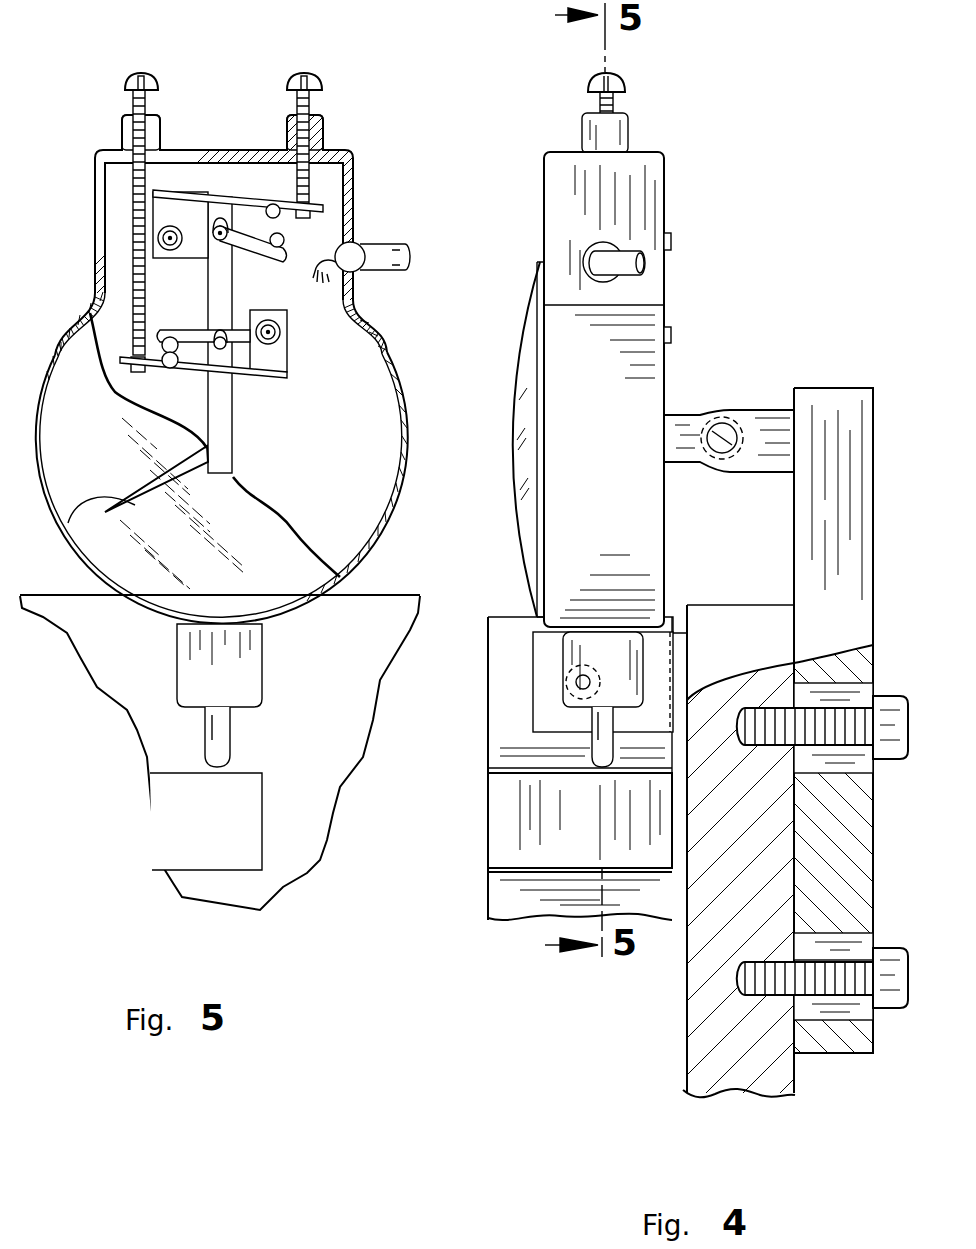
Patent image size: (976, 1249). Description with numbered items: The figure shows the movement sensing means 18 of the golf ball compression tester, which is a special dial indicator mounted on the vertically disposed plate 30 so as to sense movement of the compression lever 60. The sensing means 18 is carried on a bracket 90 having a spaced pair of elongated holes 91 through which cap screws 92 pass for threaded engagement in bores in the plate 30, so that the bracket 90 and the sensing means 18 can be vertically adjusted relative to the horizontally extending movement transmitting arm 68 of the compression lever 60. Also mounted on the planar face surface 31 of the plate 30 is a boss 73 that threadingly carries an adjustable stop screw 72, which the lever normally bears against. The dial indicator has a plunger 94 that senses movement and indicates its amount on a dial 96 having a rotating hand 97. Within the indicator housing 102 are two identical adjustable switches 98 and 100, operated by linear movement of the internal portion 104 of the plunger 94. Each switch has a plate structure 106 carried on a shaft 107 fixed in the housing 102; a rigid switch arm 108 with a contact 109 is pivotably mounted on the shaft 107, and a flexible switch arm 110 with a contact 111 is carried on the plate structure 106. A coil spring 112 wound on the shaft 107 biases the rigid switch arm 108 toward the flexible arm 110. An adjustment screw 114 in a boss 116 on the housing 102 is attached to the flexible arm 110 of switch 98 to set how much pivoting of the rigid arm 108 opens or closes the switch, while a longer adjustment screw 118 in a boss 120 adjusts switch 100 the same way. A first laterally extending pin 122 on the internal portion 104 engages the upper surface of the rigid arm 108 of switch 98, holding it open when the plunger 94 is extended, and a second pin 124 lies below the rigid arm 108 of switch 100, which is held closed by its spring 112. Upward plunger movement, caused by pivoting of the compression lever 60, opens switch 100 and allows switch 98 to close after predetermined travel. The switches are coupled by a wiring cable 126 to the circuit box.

In FIG. 5, the sensing means 18 is at (48, 340).
In FIG. 4, the sensing means 18 is at (676, 383).
In FIG. 5, the plate 30 is at (373, 617).
In FIG. 4, the plate 30 is at (778, 1066).
In FIG. 4, the planar face surface 31 is at (684, 1030).
In FIG. 4, the compression lever 60 is at (470, 893).
In FIG. 5, the movement transmitting arm 68 is at (172, 817).
In FIG. 4, the movement transmitting arm 68 is at (518, 831).
In FIG. 4, the adjustable stop screw 72 is at (578, 682).
In FIG. 4, the boss 73 is at (537, 654).
In FIG. 4, the bracket 90 is at (874, 482).
In FIG. 4, the elongated holes 91 is at (845, 695).
In FIG. 4, the cap screws 92 is at (907, 740).
In FIG. 5, the plunger 94 is at (220, 728).
In FIG. 4, the plunger 94 is at (597, 740).
In FIG. 5, the dial 96 is at (105, 535).
In FIG. 5, the rotating hand 97 is at (66, 529).
In FIG. 5, the adjustable switch 98 is at (166, 180).
In FIG. 5, the adjustable switch 100 is at (281, 403).
In FIG. 5, the indicator housing 102 is at (390, 358).
In FIG. 5, the internal portion 104 is at (224, 444).
In FIG. 5, the plate structure 106 is at (155, 212).
In FIG. 5, the shaft 107 is at (172, 246).
In FIG. 4, the shaft 107 is at (670, 243).
In FIG. 5, the rigid switch arm 108 is at (284, 258).
In FIG. 5, the contact 109 is at (278, 233).
In FIG. 5, the flexible switch arm 110 is at (223, 192).
In FIG. 5, the contact 111 is at (273, 204).
In FIG. 5, the coil spring 112 is at (158, 238).
In FIG. 5, the adjustment screw 114 is at (312, 148).
In FIG. 4, the adjustment screw 114 is at (612, 105).
In FIG. 5, the boss 116 is at (323, 122).
In FIG. 4, the boss 116 is at (625, 130).
In FIG. 5, the adjustment screw 118 is at (131, 77).
In FIG. 5, the boss 120 is at (122, 130).
In FIG. 5, the first laterally extending pin 122 is at (216, 229).
In FIG. 5, the second laterally extending pin 124 is at (221, 352).
In FIG. 5, the wiring cable 126 is at (376, 253).
In FIG. 4, the wiring cable 126 is at (640, 250).